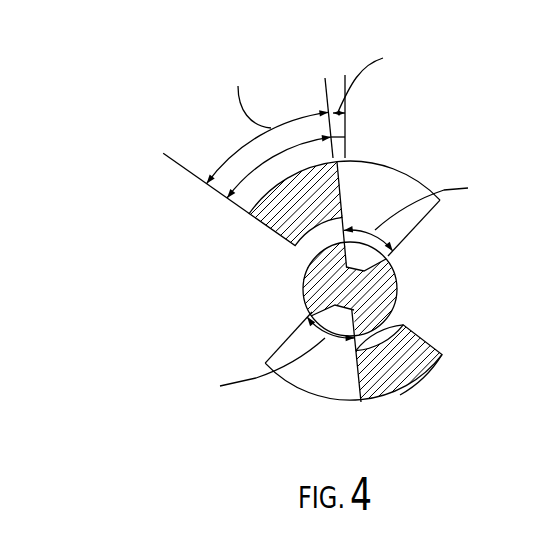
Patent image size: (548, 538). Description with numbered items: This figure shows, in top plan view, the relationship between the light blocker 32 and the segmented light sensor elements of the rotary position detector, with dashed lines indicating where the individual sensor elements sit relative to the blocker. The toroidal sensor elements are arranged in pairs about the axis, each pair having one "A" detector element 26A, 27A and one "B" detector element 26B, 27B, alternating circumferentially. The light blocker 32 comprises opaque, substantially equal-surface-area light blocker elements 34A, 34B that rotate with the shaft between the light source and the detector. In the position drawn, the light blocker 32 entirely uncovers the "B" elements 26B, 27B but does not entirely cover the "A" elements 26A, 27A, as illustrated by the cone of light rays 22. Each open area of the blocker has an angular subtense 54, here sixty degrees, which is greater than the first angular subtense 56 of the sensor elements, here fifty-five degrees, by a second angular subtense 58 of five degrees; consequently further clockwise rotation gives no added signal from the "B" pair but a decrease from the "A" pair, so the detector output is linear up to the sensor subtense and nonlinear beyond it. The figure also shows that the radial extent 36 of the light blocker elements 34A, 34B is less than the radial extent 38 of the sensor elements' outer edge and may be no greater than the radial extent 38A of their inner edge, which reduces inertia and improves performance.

The light rays 22 is at (381, 162).
The "A" detector element 26A is at (414, 369).
The "B" detector element 26B is at (300, 378).
The "A" detector element 27A is at (252, 218).
The "B" detector element 27B is at (396, 192).
The light blocker 32 is at (397, 261).
The light blocker element 34A is at (398, 300).
The light blocker element 34B is at (310, 311).
The radial extent of the light blocker elements 36 is at (308, 268).
The radial extent of the outer edge of the light sensor elements 38 is at (406, 386).
The radial extent of the inner edge of the light sensor elements 38A is at (386, 329).
The angular subtense of the open areas of the light blocker 54 is at (342, 288).
The first angular subtense of the light sensor elements 56 is at (276, 157).
The second angular subtense 58 is at (533, 56).